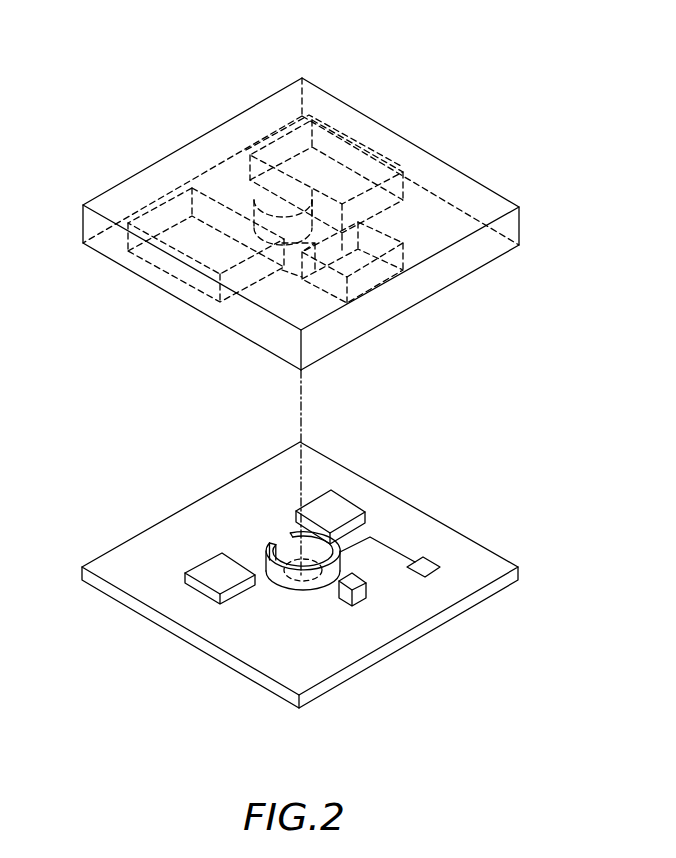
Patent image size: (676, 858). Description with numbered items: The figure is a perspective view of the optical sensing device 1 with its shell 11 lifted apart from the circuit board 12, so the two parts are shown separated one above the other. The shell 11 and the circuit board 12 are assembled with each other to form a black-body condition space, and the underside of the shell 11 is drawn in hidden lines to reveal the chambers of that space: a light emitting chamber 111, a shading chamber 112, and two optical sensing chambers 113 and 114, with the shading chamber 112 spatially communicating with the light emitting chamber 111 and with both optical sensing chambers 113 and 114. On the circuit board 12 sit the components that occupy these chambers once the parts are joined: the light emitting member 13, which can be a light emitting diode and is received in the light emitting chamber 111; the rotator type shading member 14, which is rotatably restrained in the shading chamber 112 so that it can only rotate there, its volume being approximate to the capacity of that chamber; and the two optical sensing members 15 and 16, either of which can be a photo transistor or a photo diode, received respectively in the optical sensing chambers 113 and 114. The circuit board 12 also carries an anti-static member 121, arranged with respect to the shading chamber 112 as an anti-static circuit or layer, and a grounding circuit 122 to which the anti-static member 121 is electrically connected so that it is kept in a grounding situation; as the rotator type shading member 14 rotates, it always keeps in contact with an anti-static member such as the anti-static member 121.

The optical sensing device 1 is at (440, 109).
The shell 11 is at (470, 194).
The light emitting chamber 111 is at (370, 290).
The shading chamber 112 is at (265, 205).
The optical sensing chamber 113 is at (178, 268).
The optical sensing chamber 114 is at (347, 157).
The circuit board 12 is at (435, 536).
The anti-static member 121 is at (308, 588).
The grounding circuit 122 is at (425, 574).
The light emitting member 13 is at (361, 598).
The rotator type shading member 14 is at (289, 540).
The optical sensing member 15 is at (206, 591).
The optical sensing member 16 is at (342, 508).